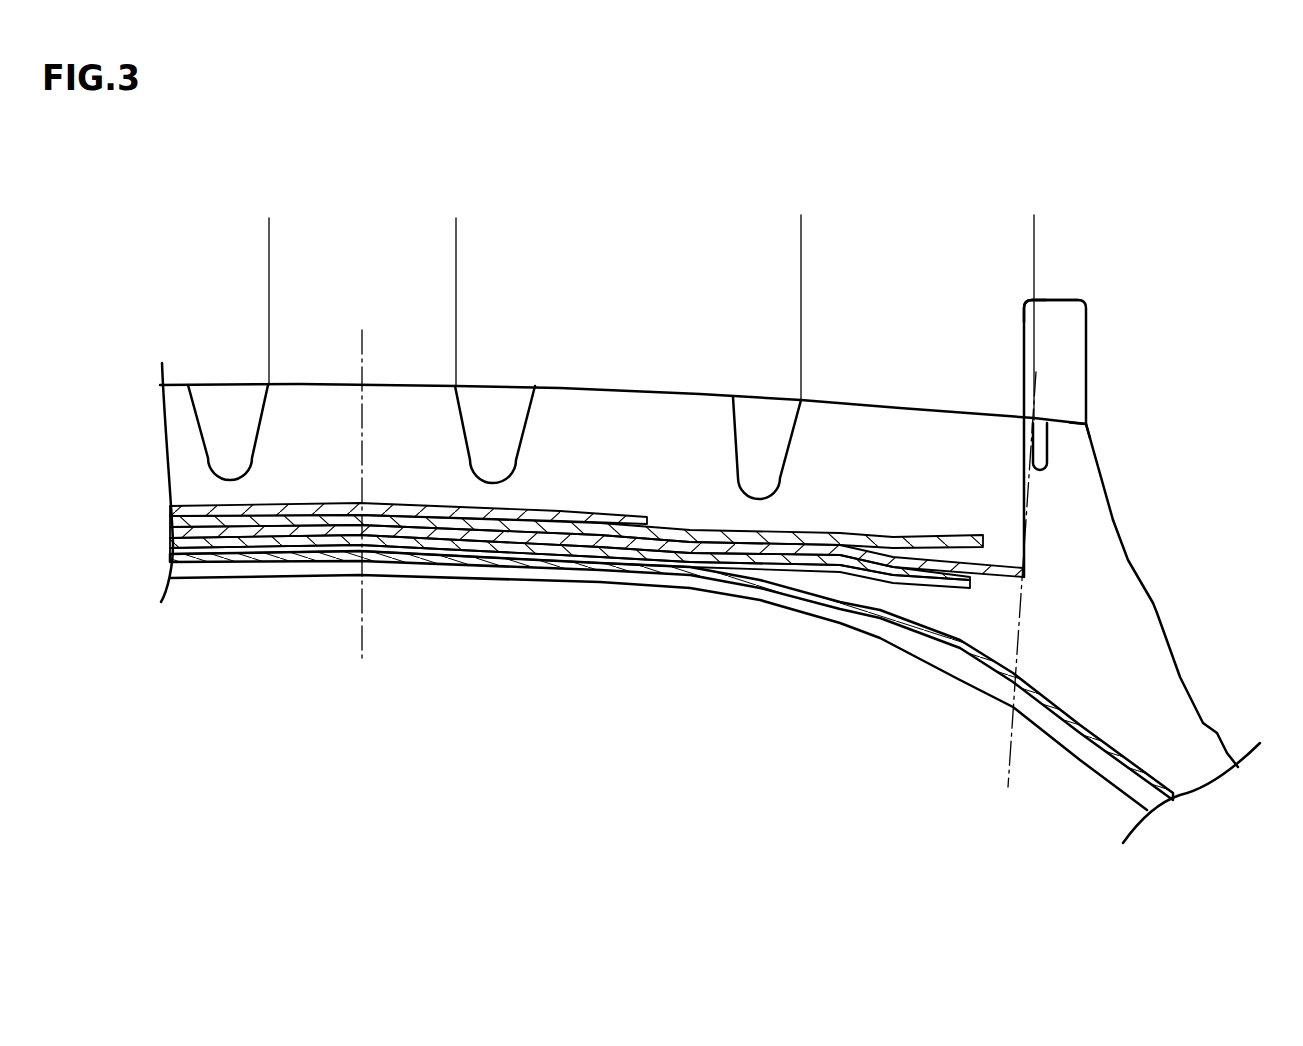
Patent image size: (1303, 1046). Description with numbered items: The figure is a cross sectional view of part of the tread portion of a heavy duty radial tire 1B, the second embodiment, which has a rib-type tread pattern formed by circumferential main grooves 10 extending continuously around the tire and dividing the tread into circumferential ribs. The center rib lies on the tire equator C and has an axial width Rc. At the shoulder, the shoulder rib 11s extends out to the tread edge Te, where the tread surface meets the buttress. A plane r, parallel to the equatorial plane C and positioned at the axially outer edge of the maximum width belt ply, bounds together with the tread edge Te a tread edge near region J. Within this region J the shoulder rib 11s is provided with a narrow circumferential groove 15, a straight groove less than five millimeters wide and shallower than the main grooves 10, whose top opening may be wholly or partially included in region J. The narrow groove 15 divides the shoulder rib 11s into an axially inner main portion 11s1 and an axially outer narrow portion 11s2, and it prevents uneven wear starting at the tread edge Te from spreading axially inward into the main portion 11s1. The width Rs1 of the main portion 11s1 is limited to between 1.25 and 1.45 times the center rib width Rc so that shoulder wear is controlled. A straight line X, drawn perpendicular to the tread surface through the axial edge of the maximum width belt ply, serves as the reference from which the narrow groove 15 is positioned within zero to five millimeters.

The circumferential main groove 10 is at (497, 403).
The narrow circumferential groove 15 is at (1033, 455).
The heavy duty radial tire 1B is at (1127, 375).
The shoulder rib 11s is at (1111, 595).
The shoulder rib main portion 11s1 is at (923, 440).
The shoulder rib narrow portion 11s2 is at (1078, 453).
The tread edge Te is at (1090, 422).
The tire equator C is at (362, 482).
The straight line X is at (1013, 745).
The tread edge near region J is at (1025, 301).
The plane r is at (1024, 358).
The axial width of center rib Rc is at (456, 225).
The rib width of shoulder rib main portion Rs1 is at (801, 221).